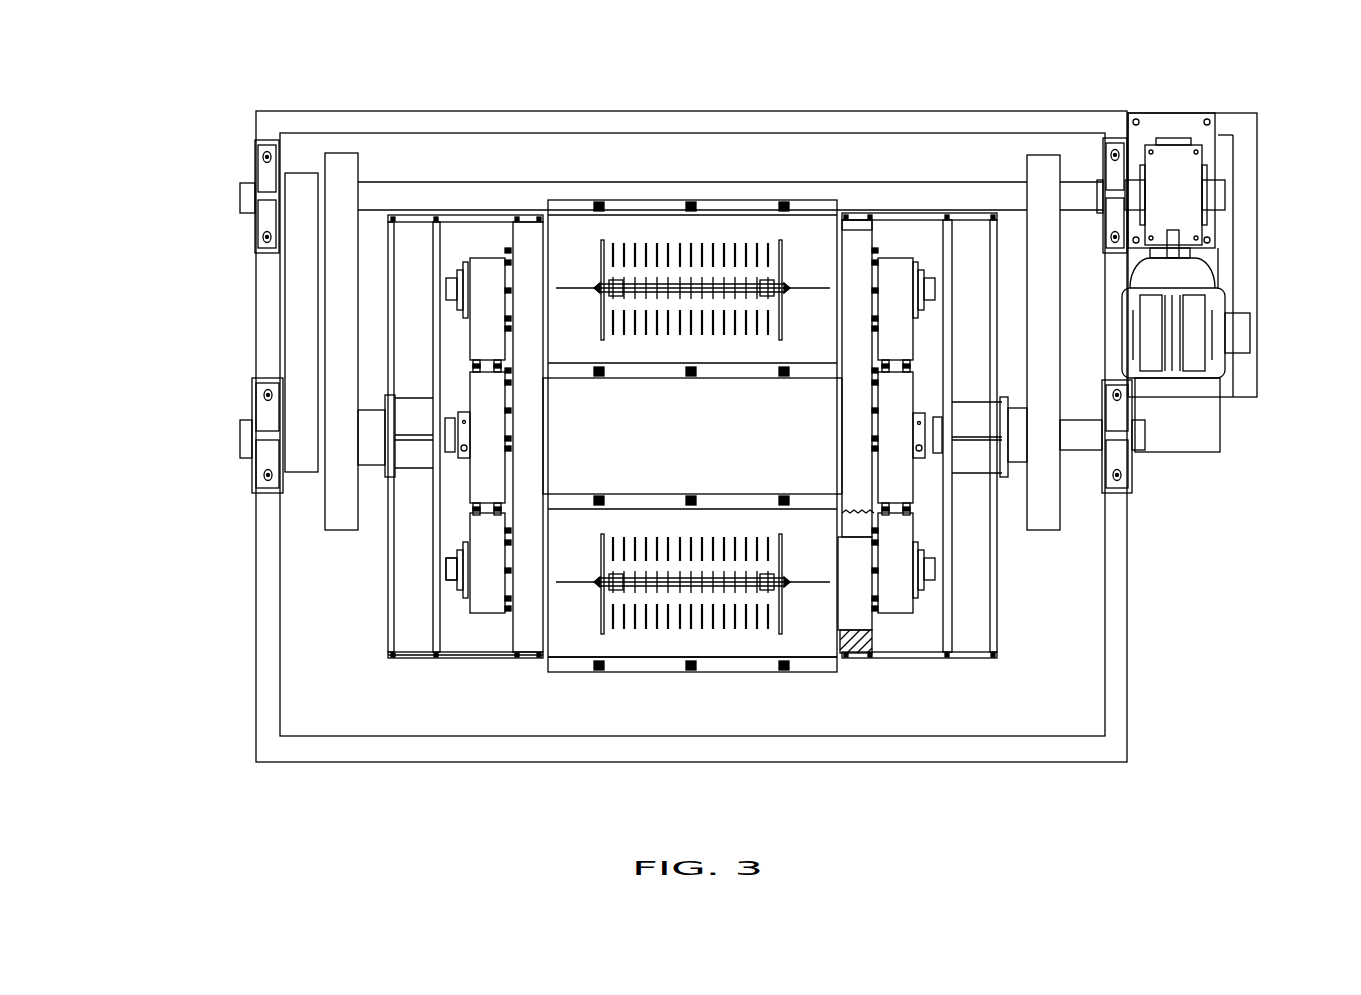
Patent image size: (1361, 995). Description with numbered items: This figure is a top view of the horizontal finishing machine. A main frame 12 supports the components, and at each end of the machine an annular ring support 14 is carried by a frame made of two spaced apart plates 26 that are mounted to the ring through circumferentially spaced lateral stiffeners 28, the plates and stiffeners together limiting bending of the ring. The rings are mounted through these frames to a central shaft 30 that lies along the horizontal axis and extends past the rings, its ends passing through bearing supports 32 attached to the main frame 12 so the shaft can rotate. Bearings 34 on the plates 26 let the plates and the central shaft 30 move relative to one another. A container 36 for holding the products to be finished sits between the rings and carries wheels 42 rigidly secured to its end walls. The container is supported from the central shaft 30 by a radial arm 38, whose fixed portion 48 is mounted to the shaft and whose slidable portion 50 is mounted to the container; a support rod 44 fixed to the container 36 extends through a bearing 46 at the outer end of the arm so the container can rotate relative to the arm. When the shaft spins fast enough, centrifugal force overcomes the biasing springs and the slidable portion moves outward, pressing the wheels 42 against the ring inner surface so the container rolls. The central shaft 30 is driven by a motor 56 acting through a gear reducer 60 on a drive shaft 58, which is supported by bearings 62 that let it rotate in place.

The main frame 12 is at (1112, 694).
The first support 14 is at (874, 636).
The plates 26 is at (388, 600).
The lateral stiffeners 28 is at (468, 658).
The central shaft 30 is at (1083, 452).
The bearing supports 32 is at (266, 466).
The bearings 34 is at (410, 423).
The container 36 is at (808, 215).
The radial arm 38 is at (474, 525).
The wheels 42 is at (856, 592).
The support rod 44 is at (446, 345).
The bearing 46 is at (455, 598).
The fixed portion 48 is at (480, 487).
The slidable portion 50 is at (455, 540).
The motor 56 is at (1225, 294).
The drive shaft 58 is at (1003, 190).
The gear reducer 60 is at (1203, 155).
The bearings 62 is at (262, 186).